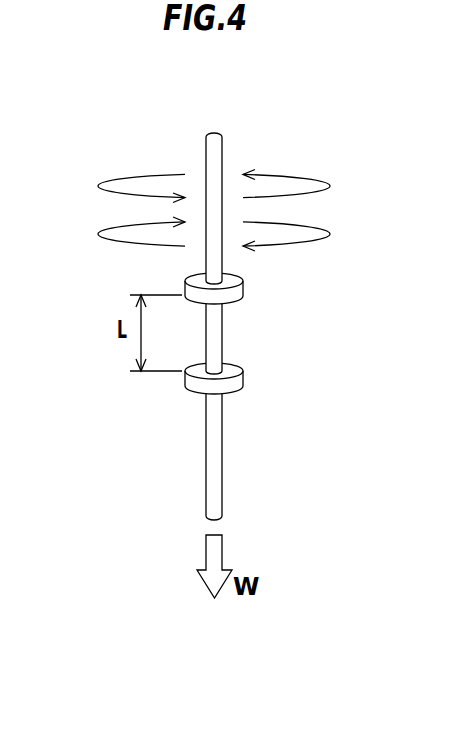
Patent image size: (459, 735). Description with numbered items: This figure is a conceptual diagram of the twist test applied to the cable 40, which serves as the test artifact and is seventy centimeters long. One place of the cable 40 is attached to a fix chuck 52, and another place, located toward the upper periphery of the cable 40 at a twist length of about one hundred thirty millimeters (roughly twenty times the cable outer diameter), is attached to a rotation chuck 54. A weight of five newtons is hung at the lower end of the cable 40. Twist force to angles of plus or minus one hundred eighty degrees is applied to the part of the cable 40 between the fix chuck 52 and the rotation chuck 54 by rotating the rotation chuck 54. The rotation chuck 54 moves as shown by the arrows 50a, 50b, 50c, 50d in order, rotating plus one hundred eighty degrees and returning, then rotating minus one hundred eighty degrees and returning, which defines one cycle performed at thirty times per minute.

The cable 40 is at (206, 450).
The fix chuck 52 is at (243, 378).
The rotation chuck 54 is at (243, 288).
The arrow 50a is at (309, 185).
The arrow 50b is at (309, 236).
The arrow 50c is at (117, 233).
The arrow 50d is at (117, 187).